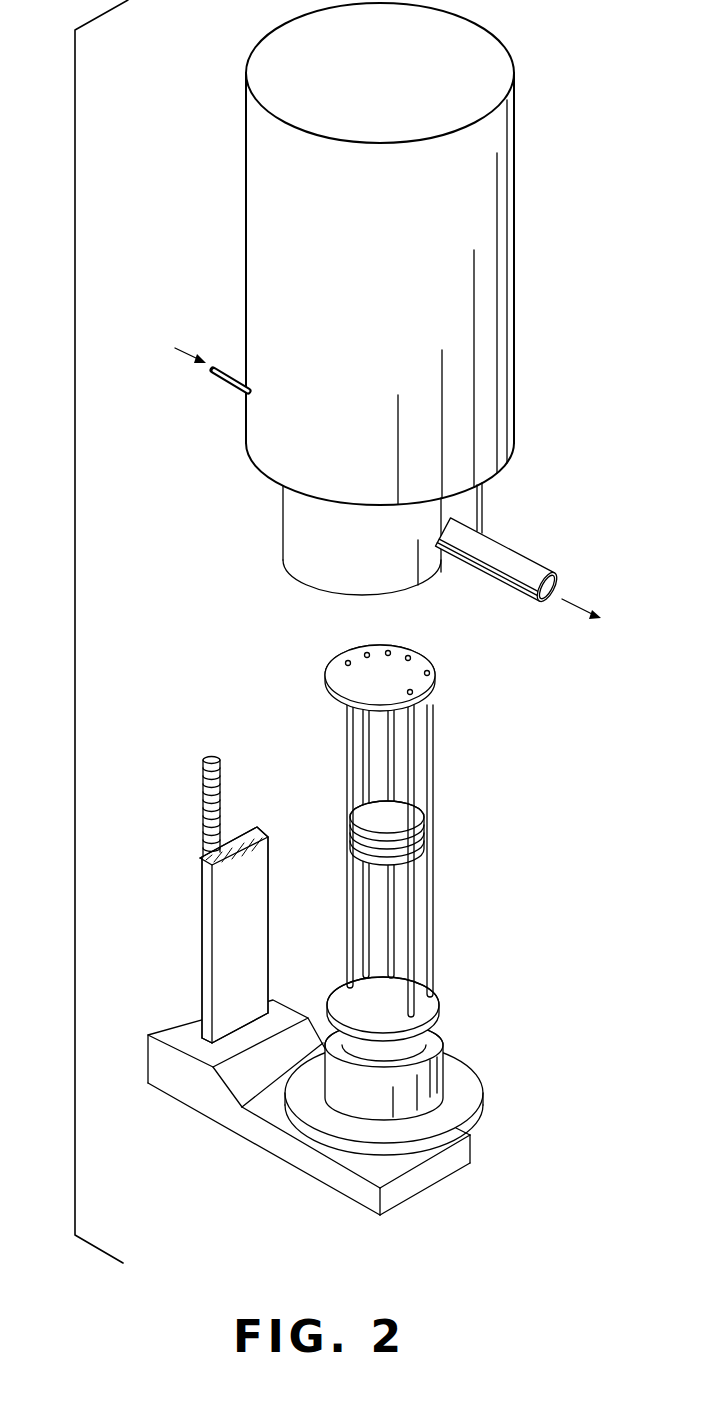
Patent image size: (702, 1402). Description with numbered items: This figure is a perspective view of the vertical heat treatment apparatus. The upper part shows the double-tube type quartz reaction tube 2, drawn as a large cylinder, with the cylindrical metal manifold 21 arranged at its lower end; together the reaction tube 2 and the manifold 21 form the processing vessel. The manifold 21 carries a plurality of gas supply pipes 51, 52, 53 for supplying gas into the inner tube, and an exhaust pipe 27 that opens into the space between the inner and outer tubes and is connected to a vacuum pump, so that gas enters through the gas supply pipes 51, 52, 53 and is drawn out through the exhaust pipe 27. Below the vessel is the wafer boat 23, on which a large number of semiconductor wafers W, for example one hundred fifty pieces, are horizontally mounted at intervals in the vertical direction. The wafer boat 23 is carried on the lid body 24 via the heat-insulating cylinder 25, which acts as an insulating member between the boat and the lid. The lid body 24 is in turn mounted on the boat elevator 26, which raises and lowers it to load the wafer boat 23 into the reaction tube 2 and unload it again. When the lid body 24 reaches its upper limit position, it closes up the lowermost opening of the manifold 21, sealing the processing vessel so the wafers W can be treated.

The reaction tube 2 is at (272, 445).
The manifold 21 is at (283, 535).
The wafer boat 23 is at (441, 831).
The lid body 24 is at (475, 1085).
The heat-insulating cylinder 25 is at (345, 1105).
The boat elevator 26 is at (270, 1108).
The exhaust pipe 27 is at (507, 548).
The gas supply pipe 51 is at (190, 395).
The gas supply pipe 52 is at (190, 395).
The gas supply pipe 53 is at (226, 386).
The semiconductor wafers W is at (422, 818).